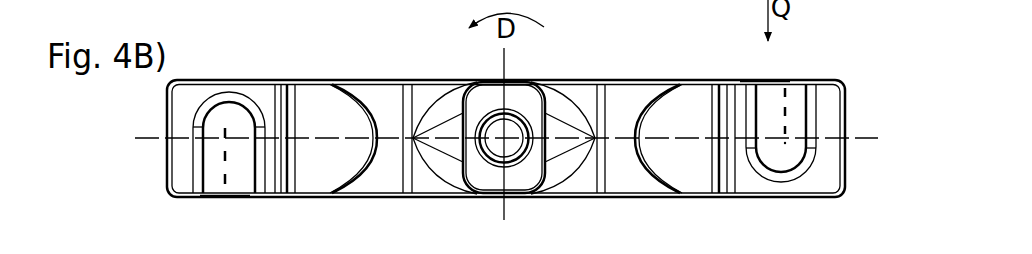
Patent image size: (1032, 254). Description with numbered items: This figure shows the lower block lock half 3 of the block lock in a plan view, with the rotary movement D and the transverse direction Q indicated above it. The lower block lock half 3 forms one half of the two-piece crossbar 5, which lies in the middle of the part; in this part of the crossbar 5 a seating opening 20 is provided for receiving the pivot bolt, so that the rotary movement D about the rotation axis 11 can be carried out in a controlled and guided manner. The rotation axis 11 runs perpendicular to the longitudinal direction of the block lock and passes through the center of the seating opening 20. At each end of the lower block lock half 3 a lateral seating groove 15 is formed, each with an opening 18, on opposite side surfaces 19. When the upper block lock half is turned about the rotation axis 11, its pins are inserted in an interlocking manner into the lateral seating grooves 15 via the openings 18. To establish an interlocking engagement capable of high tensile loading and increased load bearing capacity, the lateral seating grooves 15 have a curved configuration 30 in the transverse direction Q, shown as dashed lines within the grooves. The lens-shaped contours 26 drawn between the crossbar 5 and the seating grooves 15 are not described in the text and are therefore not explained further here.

The lower block lock half 3 is at (213, 62).
The crossbar 5 is at (524, 95).
The rotation axis 11 is at (503, 136).
The lateral seating groove 15 is at (858, 83).
The opening 18 is at (221, 201).
The side surface 19 is at (233, 78).
The seating opening 20 is at (509, 152).
The rib 26 is at (515, 170).
The curved configuration 30 is at (222, 176).